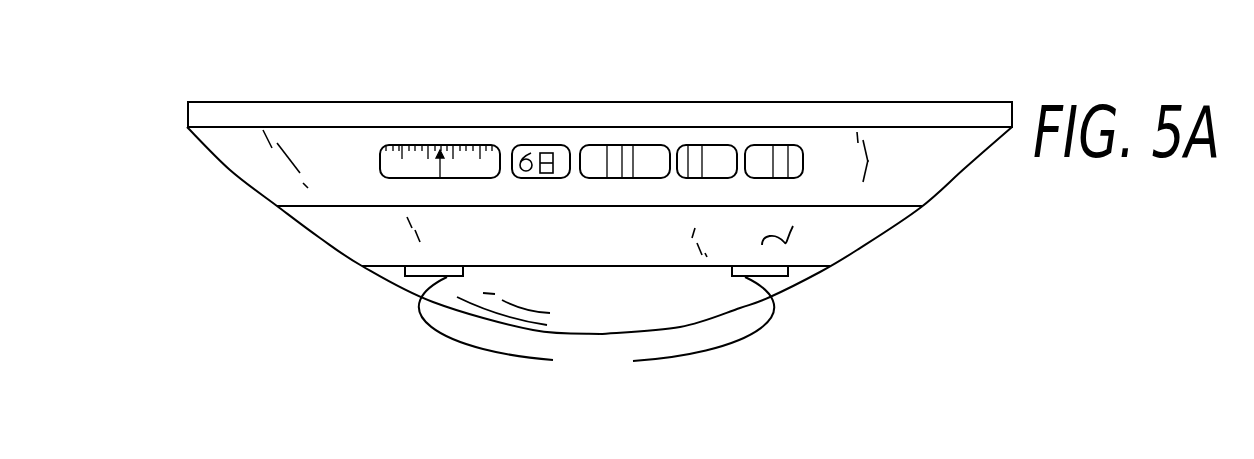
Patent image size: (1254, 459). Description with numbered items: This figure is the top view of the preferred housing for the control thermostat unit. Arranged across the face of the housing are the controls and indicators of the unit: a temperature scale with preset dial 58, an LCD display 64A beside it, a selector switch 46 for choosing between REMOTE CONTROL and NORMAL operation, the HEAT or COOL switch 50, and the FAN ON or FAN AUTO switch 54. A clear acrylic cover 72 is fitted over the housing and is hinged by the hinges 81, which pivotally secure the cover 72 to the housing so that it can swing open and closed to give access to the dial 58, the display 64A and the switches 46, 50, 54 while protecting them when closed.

The scale display 58 is at (419, 146).
The date display 64A is at (531, 147).
The display window 46 is at (612, 146).
The display window 50 is at (708, 146).
The display window 54 is at (780, 146).
The seam 72 is at (784, 242).
The base 81 is at (596, 330).